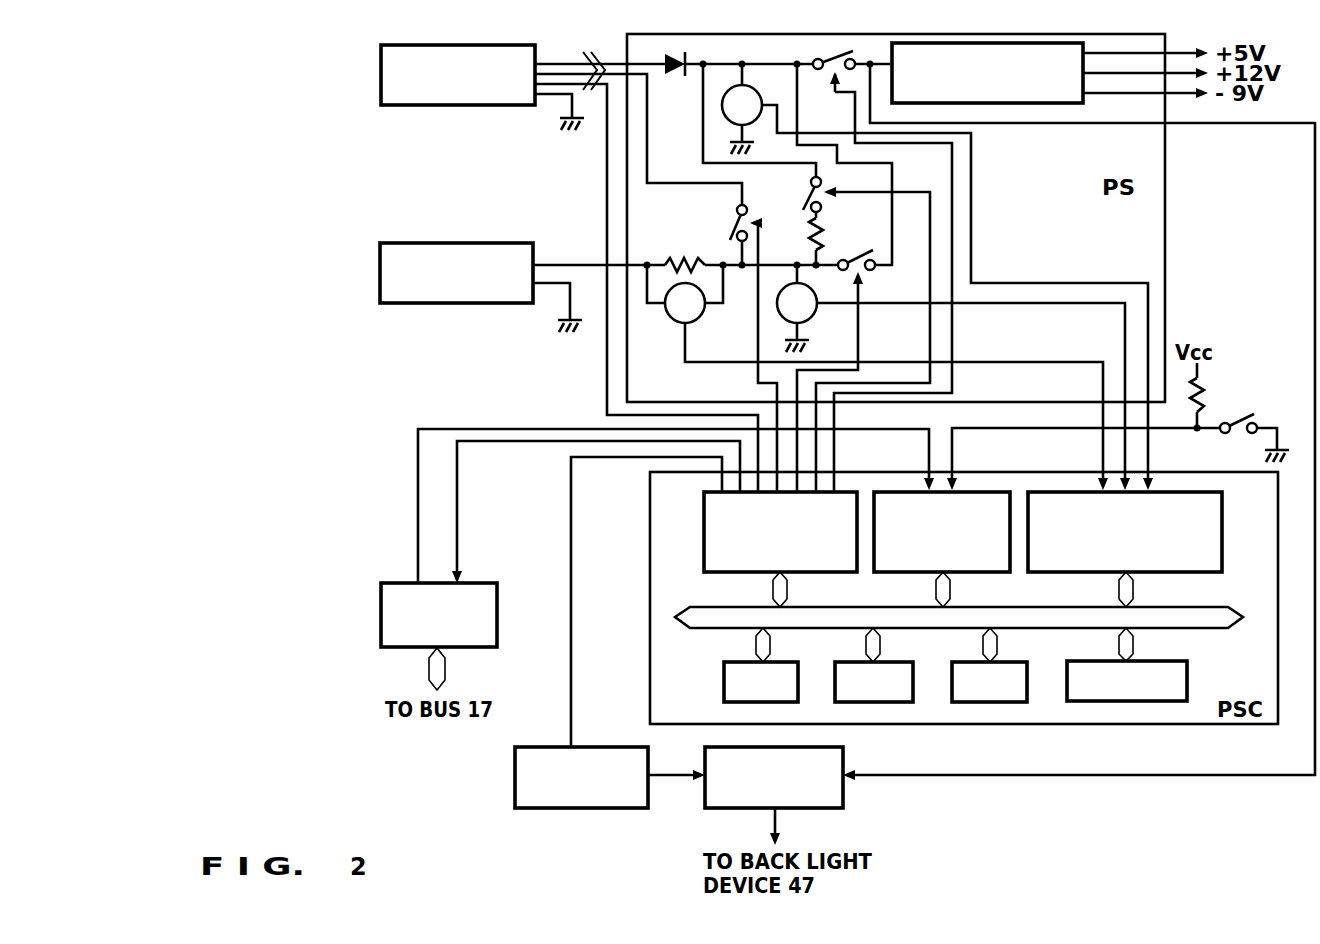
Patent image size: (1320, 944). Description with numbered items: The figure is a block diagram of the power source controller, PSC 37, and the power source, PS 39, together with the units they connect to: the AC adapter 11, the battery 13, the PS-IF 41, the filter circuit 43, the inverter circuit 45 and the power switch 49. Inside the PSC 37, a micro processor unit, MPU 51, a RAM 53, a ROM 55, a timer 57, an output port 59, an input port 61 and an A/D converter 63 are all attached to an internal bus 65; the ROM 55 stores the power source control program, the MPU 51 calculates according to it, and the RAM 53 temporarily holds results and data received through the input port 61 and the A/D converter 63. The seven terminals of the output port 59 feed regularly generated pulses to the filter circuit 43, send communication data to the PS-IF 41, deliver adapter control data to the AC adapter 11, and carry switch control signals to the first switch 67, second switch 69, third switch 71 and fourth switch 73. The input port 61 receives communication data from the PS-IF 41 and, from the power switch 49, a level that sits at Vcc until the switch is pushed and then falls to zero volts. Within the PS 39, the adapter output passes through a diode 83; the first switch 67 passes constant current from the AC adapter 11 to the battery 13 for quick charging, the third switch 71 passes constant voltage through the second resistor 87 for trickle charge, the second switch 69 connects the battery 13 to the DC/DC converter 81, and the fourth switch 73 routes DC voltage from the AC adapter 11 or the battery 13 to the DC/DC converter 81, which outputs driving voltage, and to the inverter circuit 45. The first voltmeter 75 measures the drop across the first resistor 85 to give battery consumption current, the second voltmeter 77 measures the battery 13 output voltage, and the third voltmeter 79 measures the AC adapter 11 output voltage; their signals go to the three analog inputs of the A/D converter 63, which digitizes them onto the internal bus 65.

The AC adapter 11 is at (441, 105).
The battery 13 is at (437, 303).
The power source controller (PSC) 37 is at (1180, 724).
The power source (PS) 39 is at (1165, 215).
The PS-IF 41 is at (381, 616).
The filter circuit 43 is at (531, 747).
The inverter circuit 45 is at (843, 785).
The power switch 49 is at (1242, 413).
The micro processor unit (MPU) 51 is at (790, 646).
The RAM 53 is at (904, 646).
The ROM 55 is at (1018, 646).
The timer 57 is at (1174, 645).
The output port 59 is at (830, 572).
The input port 61 is at (985, 572).
The analog/digital (A/D) converter 63 is at (1178, 572).
The internal bus 65 is at (710, 628).
The first switch 67 is at (736, 217).
The second switch 69 is at (862, 270).
The third switch 71 is at (810, 196).
The fourth switch 73 is at (826, 72).
The first voltmeter 75 is at (670, 320).
The second voltmeter 77 is at (812, 318).
The third voltmeter 79 is at (757, 96).
The DC/DC converter circuit 81 is at (1075, 103).
The diode 83 is at (675, 77).
The first resistor 85 is at (687, 255).
The second resistor 87 is at (842, 210).